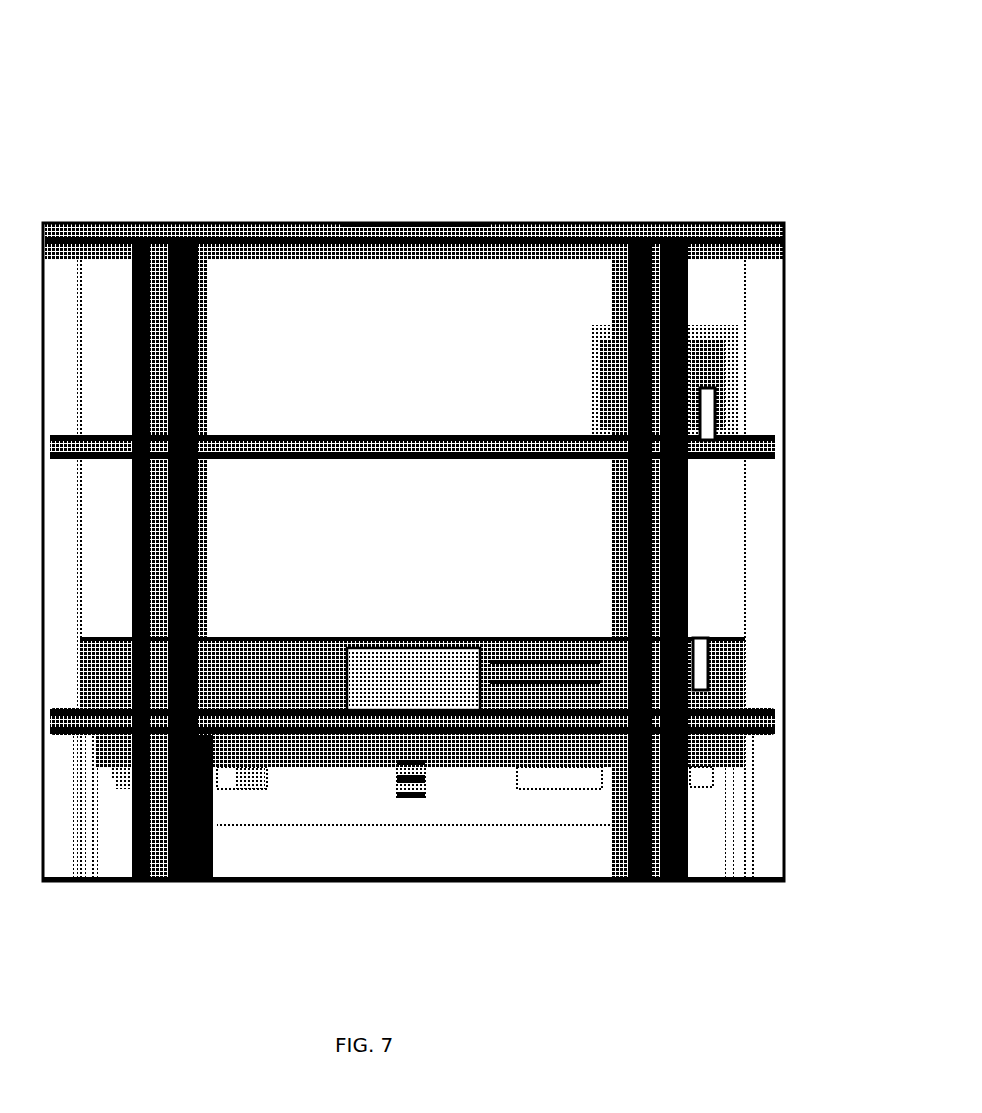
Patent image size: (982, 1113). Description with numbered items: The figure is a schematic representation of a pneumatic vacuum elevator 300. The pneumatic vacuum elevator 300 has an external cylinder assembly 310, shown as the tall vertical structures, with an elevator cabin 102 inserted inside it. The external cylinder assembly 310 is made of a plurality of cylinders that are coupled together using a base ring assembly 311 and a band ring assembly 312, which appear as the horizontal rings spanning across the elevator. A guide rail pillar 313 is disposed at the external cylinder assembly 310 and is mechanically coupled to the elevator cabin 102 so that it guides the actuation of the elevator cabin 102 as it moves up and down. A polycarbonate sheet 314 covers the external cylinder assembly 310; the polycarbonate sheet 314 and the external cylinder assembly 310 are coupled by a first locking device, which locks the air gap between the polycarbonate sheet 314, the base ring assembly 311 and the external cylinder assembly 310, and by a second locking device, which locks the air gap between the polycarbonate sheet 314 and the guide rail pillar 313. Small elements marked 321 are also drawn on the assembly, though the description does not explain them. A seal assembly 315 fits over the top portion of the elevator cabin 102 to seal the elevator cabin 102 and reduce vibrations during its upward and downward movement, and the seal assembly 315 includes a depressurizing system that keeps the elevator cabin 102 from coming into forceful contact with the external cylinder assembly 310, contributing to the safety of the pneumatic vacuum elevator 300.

The pneumatic vacuum elevator 300 is at (540, 105).
The guide rail pillar 313 is at (175, 352).
The external cylinder assembly 310 is at (688, 324).
The base ring assembly 311 is at (758, 448).
The band ring assembly 312 is at (712, 710).
The polycarbonate sheet 314 is at (742, 545).
The sensor block 321 is at (715, 400).
The elevator cabin 102 is at (378, 648).
The seal assembly 315 is at (495, 680).